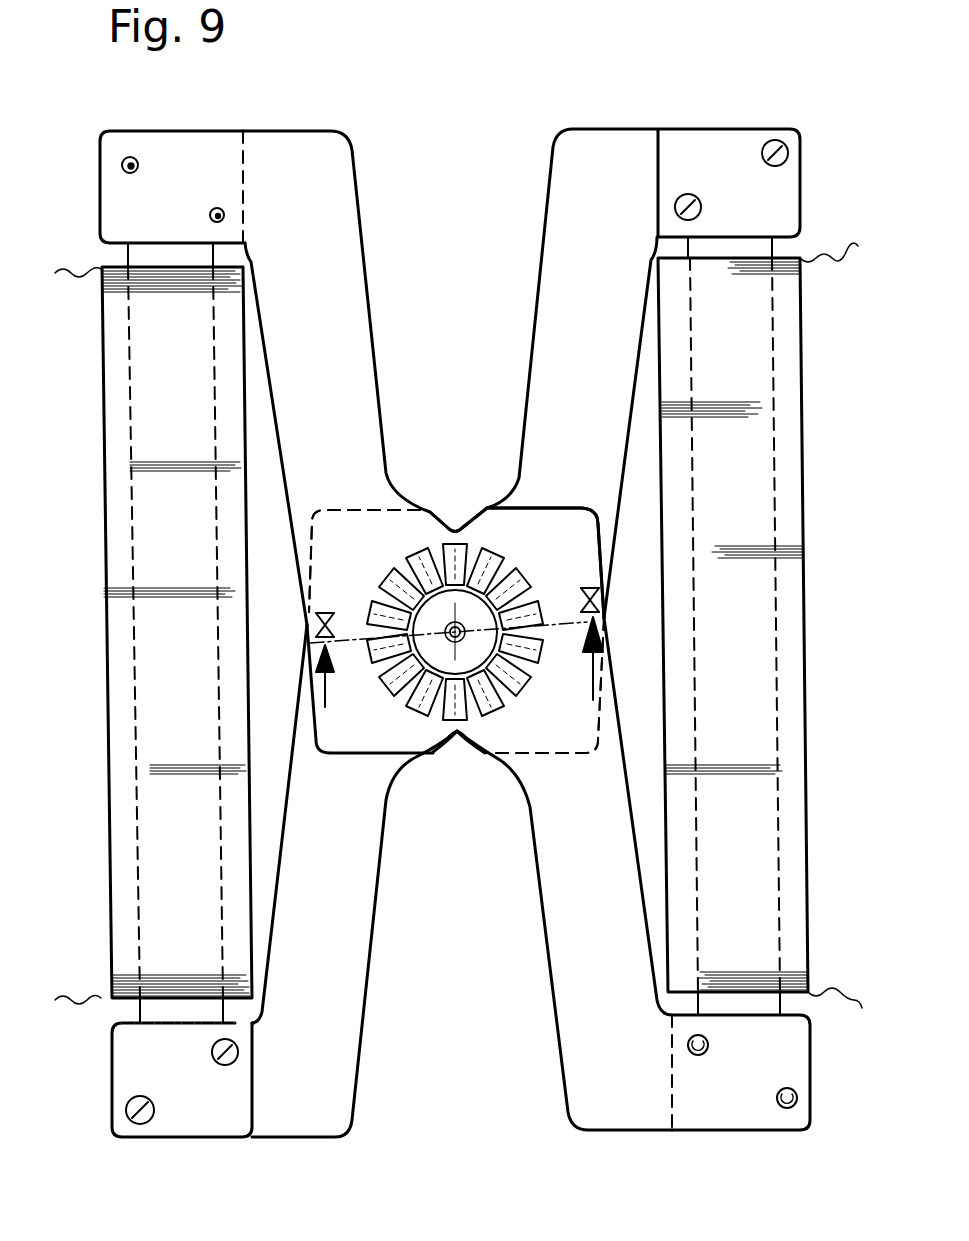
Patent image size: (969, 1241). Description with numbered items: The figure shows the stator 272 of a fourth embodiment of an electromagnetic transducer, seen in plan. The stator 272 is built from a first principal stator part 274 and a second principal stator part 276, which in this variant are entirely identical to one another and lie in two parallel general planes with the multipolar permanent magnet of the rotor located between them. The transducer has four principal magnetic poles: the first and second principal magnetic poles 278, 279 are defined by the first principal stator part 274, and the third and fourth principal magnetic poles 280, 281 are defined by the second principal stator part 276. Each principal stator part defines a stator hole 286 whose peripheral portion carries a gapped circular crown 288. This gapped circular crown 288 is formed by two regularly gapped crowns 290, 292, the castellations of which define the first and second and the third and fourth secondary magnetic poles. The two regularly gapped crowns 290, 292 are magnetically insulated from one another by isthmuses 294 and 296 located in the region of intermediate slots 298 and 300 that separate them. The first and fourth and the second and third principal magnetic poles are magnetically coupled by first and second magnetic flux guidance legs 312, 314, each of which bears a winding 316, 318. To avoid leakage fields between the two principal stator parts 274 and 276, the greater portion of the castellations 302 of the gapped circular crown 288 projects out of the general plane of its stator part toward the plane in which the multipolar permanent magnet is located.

The stator 272 is at (440, 168).
The first principal stator part 274 is at (325, 280).
The second principal stator part 276 is at (582, 262).
The first principal magnetic pole 278 is at (380, 540).
The second principal magnetic pole 279 is at (568, 708).
The third principal magnetic pole 280 is at (542, 556).
The fourth principal magnetic pole 281 is at (370, 706).
The stator hole 286 is at (474, 616).
The gapped circular crown 288 is at (492, 727).
The first regularly gapped crown 290 is at (358, 583).
The second regularly gapped crown 292 is at (541, 588).
The isthmus 294 is at (455, 518).
The isthmus 296 is at (457, 745).
The intermediate slot 298 is at (460, 558).
The intermediate slot 300 is at (452, 722).
The castellations 302 is at (527, 660).
The first magnetic flux guidance leg 312 is at (152, 257).
The second magnetic flux guidance leg 314 is at (740, 247).
The winding 316 is at (125, 657).
The winding 318 is at (790, 795).